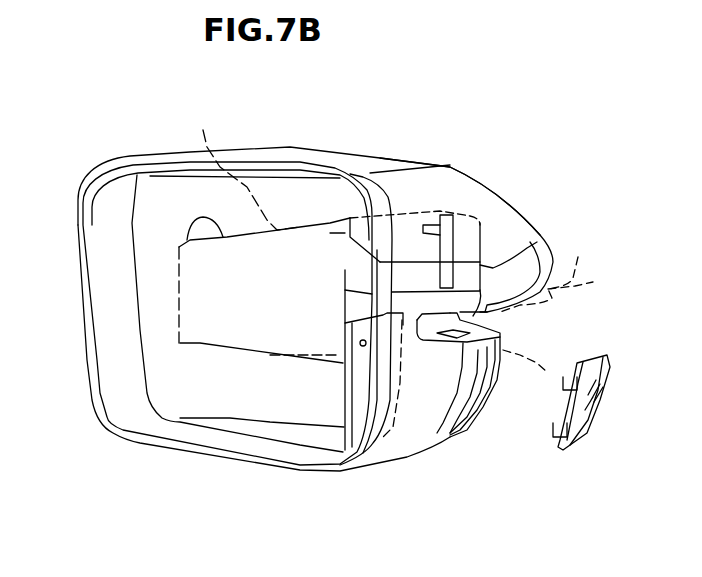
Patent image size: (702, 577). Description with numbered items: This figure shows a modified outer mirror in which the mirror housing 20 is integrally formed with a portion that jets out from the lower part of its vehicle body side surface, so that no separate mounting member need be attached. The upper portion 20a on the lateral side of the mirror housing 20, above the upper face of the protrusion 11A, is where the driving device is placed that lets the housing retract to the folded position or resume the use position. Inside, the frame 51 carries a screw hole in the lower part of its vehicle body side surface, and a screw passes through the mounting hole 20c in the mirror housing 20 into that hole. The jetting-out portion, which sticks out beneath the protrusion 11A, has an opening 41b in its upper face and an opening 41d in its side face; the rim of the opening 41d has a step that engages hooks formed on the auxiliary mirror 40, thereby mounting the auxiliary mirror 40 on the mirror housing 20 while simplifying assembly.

The mirror housing 20 is at (340, 152).
The upper portion 20a is at (467, 183).
The mounting hole 20c is at (358, 343).
The frame 51 is at (203, 130).
The opening 41b is at (465, 318).
The opening 41d is at (472, 441).
The protrusion 11A is at (580, 250).
The auxiliary mirror 40 is at (573, 450).